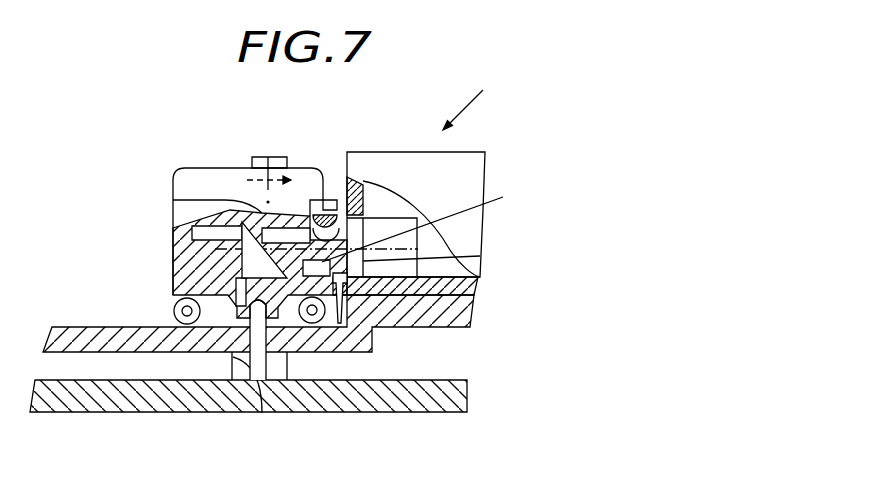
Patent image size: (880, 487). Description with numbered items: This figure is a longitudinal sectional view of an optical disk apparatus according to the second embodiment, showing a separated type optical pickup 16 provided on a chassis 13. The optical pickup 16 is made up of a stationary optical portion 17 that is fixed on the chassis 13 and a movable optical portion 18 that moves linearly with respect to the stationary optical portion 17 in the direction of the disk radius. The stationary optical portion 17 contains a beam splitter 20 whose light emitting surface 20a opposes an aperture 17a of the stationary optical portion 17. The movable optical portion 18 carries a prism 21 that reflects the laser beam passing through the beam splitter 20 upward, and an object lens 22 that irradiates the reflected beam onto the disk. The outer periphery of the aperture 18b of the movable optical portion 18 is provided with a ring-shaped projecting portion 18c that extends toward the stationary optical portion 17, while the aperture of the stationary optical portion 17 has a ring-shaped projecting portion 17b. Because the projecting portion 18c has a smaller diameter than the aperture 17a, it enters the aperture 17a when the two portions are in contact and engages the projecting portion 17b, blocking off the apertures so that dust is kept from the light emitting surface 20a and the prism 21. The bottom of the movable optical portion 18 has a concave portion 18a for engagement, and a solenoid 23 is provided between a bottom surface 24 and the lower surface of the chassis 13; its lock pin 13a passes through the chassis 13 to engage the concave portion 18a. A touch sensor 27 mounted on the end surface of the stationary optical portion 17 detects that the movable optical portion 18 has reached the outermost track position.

The chassis 13 is at (70, 337).
The pin 13a is at (262, 413).
The optical pickup 16 is at (476, 97).
The stationary optical portion 17 is at (437, 201).
The aperture 17a is at (420, 252).
The ring-shaped projecting portion 17b is at (336, 200).
The movable optical portion 18 is at (173, 240).
The concave portion 18a is at (237, 320).
The aperture 18b is at (437, 218).
The ring-shaped projecting portion 18c is at (323, 200).
The beam splitter 20 is at (397, 215).
The light emitting surface 20a is at (364, 179).
The prism 21 is at (173, 202).
The object lens 22 is at (247, 173).
The solenoid 23 is at (232, 340).
The bottom surface 24 is at (92, 413).
The touch sensor 27 is at (372, 338).